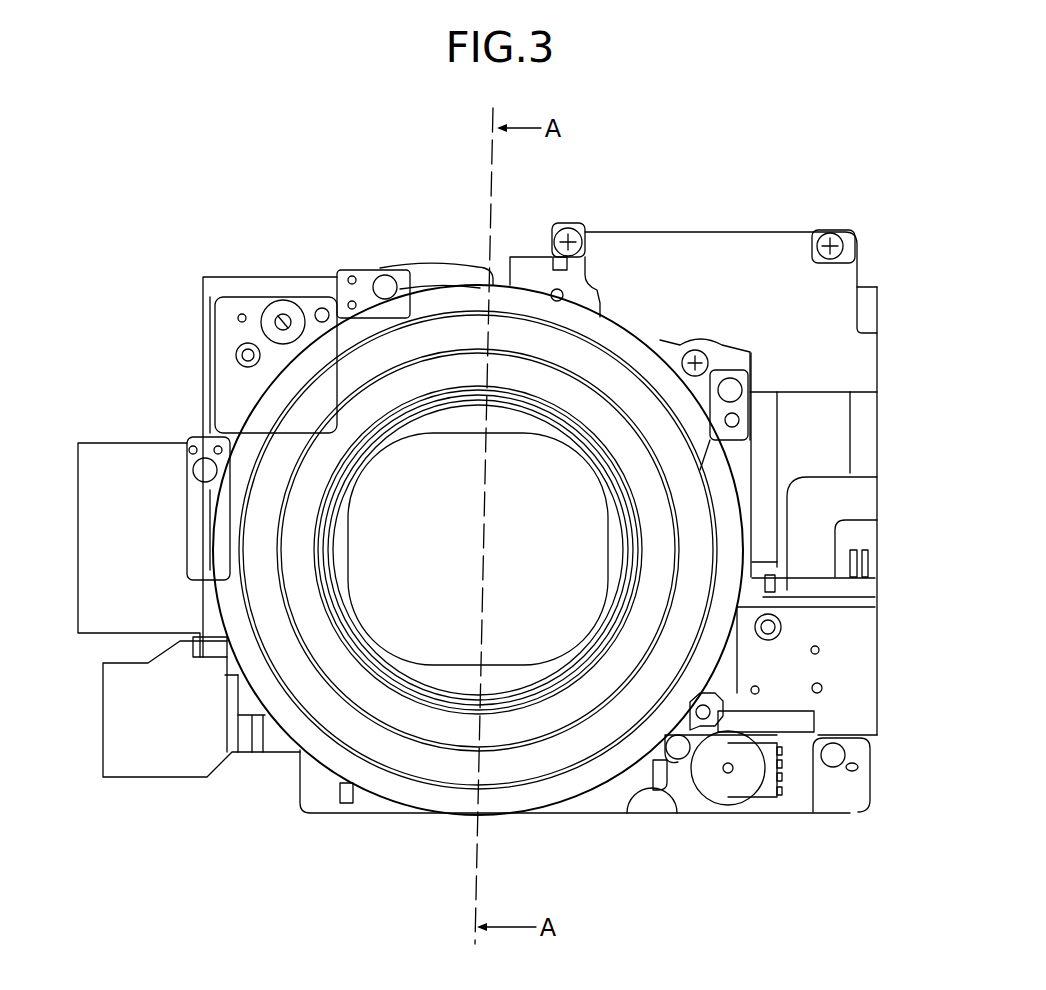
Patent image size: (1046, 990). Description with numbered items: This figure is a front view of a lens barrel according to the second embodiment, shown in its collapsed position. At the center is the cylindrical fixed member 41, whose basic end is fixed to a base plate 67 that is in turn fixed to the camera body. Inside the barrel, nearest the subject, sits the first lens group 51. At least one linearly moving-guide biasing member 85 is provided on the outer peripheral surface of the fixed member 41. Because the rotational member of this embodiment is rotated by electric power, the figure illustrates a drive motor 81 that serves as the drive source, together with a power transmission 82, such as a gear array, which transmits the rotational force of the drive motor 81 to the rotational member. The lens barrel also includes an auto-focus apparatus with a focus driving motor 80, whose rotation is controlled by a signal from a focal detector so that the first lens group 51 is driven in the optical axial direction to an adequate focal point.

The fixed member 41 is at (340, 345).
The first lens group 51 is at (423, 645).
The base plate 67 is at (878, 297).
The focus driving motor 80 is at (738, 787).
The drive motor 81 is at (818, 432).
The power transmission 82 is at (702, 264).
The linearly moving-guide biasing member 85 is at (440, 272).